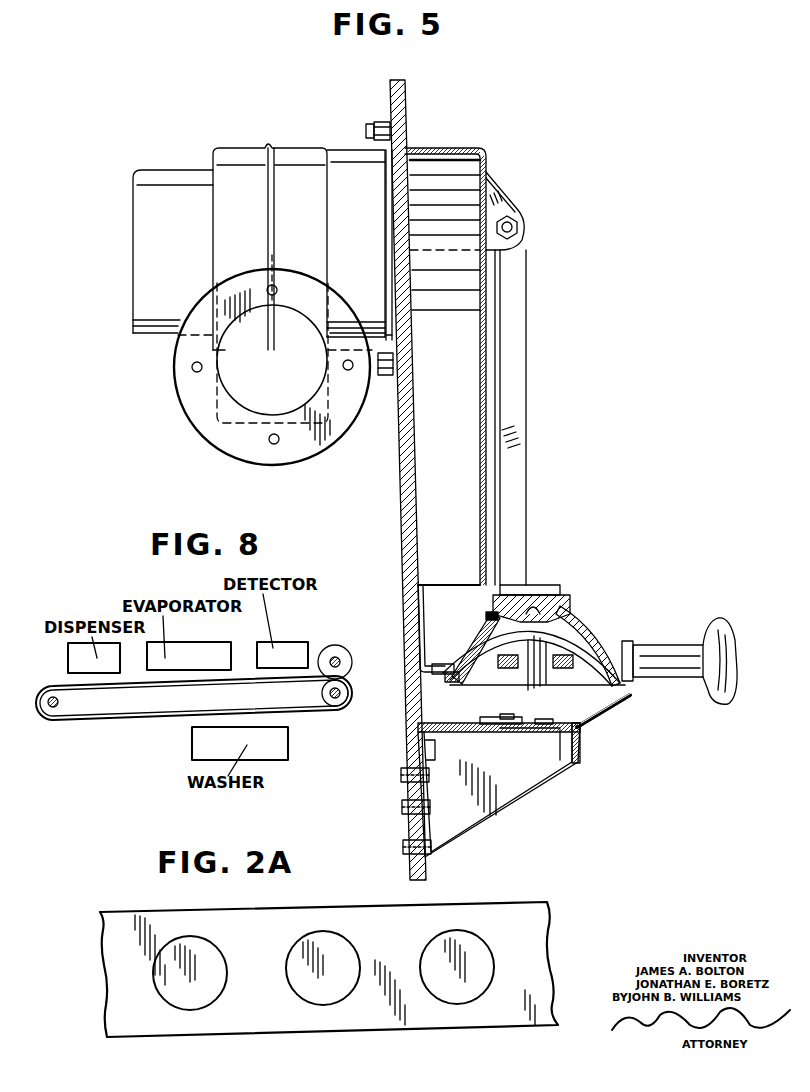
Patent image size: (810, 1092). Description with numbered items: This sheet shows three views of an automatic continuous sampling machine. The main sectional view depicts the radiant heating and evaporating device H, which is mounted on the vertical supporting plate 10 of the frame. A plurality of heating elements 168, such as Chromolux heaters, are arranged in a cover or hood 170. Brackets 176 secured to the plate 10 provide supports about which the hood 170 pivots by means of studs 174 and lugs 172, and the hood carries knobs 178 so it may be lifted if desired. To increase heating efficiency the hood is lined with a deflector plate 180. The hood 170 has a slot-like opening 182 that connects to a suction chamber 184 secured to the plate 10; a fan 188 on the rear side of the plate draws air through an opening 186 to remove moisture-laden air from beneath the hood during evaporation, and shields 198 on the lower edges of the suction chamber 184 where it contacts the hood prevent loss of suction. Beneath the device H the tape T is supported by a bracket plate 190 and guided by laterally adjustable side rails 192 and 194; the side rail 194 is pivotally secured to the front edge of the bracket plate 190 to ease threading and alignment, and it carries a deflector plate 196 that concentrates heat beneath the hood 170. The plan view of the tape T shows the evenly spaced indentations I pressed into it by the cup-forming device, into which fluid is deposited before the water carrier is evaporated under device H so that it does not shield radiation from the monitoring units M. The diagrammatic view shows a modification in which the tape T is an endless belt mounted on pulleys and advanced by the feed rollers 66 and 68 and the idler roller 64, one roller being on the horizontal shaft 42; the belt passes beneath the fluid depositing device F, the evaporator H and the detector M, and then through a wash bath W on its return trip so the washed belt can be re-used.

In FIG. 5, the vertical supporting plate 10 is at (405, 98).
In FIG. 5, the fan 188 is at (303, 152).
In FIG. 5, the suction chamber 184 is at (470, 150).
In FIG. 5, the opening 186 is at (440, 326).
In FIG. 5, the brackets 176 is at (500, 206).
In FIG. 5, the studs 174 is at (520, 228).
In FIG. 5, the lugs 172 is at (520, 478).
In FIG. 5, the cover or hood 170 is at (590, 640).
In FIG. 5, the deflector plate 180 is at (598, 650).
In FIG. 5, the heating elements 168 is at (512, 656).
In FIG. 5, the slot-like opening 182 is at (480, 641).
In FIG. 5, the shields 198 is at (488, 616).
In FIG. 5, the bracket plate 190 is at (448, 682).
In FIG. 5, the knobs 178 is at (730, 620).
In FIG. 5, the deflector plate 196 is at (613, 706).
In FIG. 5, the side rail 194 is at (584, 736).
In FIG. 5, the side rail 192 is at (490, 721).
In FIG. 5, the radiant heating and evaporating device H is at (610, 582).
In FIG. 8, the radiant heating and evaporating device H is at (206, 622).
In FIG. 5, the tape T is at (518, 720).
In FIG. 8, the tape T is at (239, 680).
In FIG. 2A, the tape T is at (120, 1000).
In FIG. 5, the indentations I is at (548, 720).
In FIG. 2A, the indentations I is at (200, 997).
In FIG. 8, the automatic fluid depositing device F is at (62, 663).
In FIG. 8, the radiation monitoring units M is at (289, 630).
In FIG. 8, the wash bath W is at (185, 750).
In FIG. 8, the horizontal shaft 42 is at (335, 702).
In FIG. 8, the idler roller 64 is at (52, 712).
In FIG. 8, the feed roller 66 is at (347, 687).
In FIG. 8, the feed roller 68 is at (334, 650).